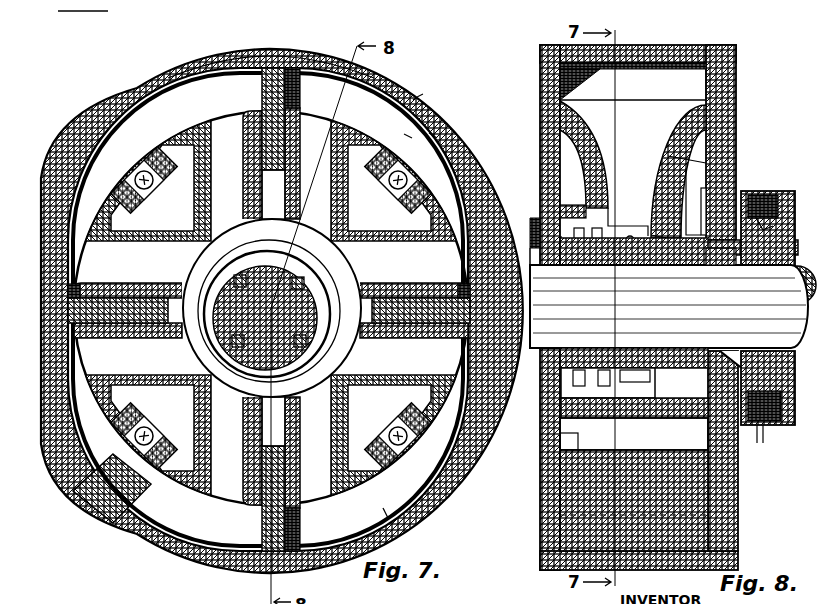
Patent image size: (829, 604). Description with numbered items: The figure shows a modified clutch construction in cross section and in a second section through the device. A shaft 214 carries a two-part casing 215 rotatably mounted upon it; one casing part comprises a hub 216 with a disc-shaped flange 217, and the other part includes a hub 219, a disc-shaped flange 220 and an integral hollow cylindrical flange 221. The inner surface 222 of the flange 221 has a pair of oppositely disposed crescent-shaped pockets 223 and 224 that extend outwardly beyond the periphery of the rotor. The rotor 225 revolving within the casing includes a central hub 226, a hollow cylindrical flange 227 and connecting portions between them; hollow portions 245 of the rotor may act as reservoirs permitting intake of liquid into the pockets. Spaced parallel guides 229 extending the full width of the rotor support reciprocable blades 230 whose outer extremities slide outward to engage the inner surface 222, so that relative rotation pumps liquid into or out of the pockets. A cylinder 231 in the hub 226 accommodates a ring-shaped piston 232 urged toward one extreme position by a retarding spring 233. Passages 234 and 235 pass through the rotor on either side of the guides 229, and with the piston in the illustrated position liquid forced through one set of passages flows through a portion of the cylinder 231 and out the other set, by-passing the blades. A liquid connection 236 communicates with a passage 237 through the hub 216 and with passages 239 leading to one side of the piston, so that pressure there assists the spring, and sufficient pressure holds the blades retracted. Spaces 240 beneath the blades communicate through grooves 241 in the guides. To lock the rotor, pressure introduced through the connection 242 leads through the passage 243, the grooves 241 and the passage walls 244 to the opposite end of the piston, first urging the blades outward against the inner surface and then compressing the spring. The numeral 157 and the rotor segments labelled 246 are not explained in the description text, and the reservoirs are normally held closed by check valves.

In FIG. 7, the supply line 157 is at (100, 5).
In FIG. 7, the shaft 214 is at (322, 272).
In FIG. 8, the shaft 214 is at (669, 306).
In FIG. 7, the casing 215 is at (432, 70).
In FIG. 8, the casing 215 is at (718, 80).
In FIG. 8, the hub 216 is at (783, 243).
In FIG. 7, the disc-shaped flange 217 is at (400, 128).
In FIG. 8, the disc-shaped flange 217 is at (710, 143).
In FIG. 8, the hub 219 is at (535, 200).
In FIG. 8, the disc-shaped flange 220 is at (534, 58).
In FIG. 7, the hollow cylindrical flange 221 is at (128, 82).
In FIG. 8, the hollow cylindrical flange 221 is at (620, 38).
In FIG. 7, the inner surface 222 is at (180, 72).
In FIG. 8, the inner surface 222 is at (667, 44).
In FIG. 7, the crescent-shaped pocket 223 is at (221, 66).
In FIG. 8, the crescent-shaped pocket 223 is at (683, 70).
In FIG. 7, the crescent-shaped pocket 224 is at (375, 505).
In FIG. 8, the crescent-shaped pocket 224 is at (700, 528).
In FIG. 7, the rotor 225 is at (107, 520).
In FIG. 8, the rotor 225 is at (683, 152).
In FIG. 7, the central hub 226 is at (175, 277).
In FIG. 8, the central hub 226 is at (567, 250).
In FIG. 7, the hollow cylindrical flange 227 is at (425, 128).
In FIG. 8, the hollow cylindrical flange 227 is at (728, 102).
In FIG. 7, the guide 229 is at (285, 104).
In FIG. 7, the blade 230 is at (263, 60).
In FIG. 8, the blade 230 is at (683, 490).
In FIG. 8, the cylinder 231 is at (533, 160).
In FIG. 8, the ring-shaped piston 232 is at (597, 197).
In FIG. 7, the retarding spring 233 is at (194, 355).
In FIG. 8, the retarding spring 233 is at (587, 250).
In FIG. 7, the passage 234 is at (168, 73).
In FIG. 7, the passage 235 is at (323, 66).
In FIG. 8, the passage 235 is at (662, 127).
In FIG. 8, the liquid connection 236 is at (747, 187).
In FIG. 8, the passage 237 is at (713, 245).
In FIG. 8, the passage 239 is at (677, 243).
In FIG. 7, the space 240 is at (268, 183).
In FIG. 8, the space 240 is at (634, 432).
In FIG. 8, the groove 241 is at (649, 157).
In FIG. 8, the connection 242 is at (750, 415).
In FIG. 8, the passage 243 is at (720, 341).
In FIG. 8, the passage wall 244 is at (677, 110).
In FIG. 7, the hollow portion 245 is at (400, 205).
In FIG. 7, the rotor segment 246 is at (100, 135).